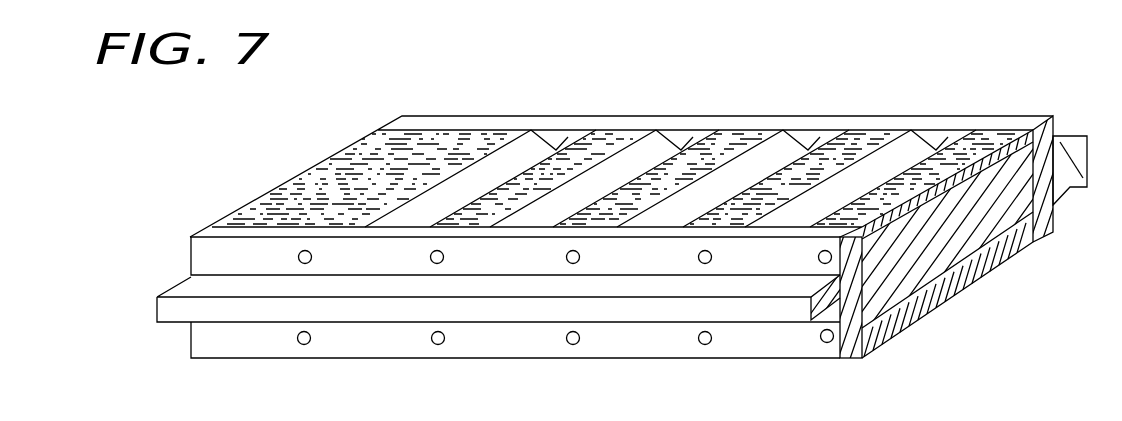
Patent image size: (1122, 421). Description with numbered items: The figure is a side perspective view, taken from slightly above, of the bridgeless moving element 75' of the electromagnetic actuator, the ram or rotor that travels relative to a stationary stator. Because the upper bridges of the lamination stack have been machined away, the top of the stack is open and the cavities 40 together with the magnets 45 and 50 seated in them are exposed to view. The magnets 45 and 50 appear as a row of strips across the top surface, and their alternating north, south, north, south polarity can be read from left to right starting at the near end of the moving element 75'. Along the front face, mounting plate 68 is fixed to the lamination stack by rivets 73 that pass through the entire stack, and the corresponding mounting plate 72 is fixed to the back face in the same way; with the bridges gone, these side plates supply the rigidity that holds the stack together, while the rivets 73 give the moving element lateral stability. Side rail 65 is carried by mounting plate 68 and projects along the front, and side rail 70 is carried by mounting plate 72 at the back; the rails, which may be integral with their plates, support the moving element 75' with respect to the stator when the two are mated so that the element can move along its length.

The cavities 40 is at (568, 142).
The magnets 45 is at (553, 147).
The magnets 50 is at (667, 137).
The side rail 65 is at (171, 312).
The mounting plate 68 is at (207, 339).
The side rail 70 is at (1080, 152).
The mounting plate 72 is at (1048, 213).
The rivets 73 is at (430, 258).
The moving element 75' is at (621, 134).